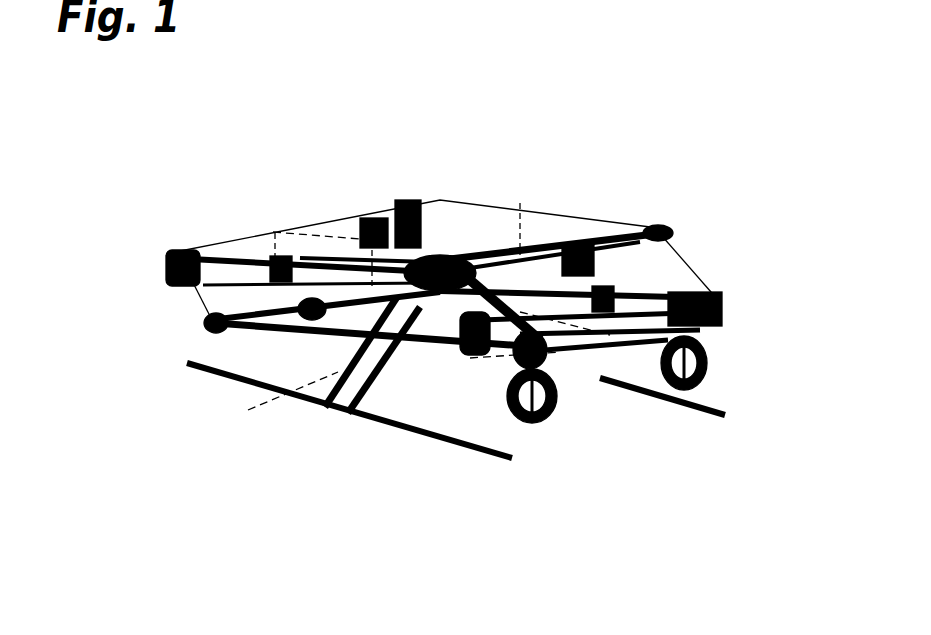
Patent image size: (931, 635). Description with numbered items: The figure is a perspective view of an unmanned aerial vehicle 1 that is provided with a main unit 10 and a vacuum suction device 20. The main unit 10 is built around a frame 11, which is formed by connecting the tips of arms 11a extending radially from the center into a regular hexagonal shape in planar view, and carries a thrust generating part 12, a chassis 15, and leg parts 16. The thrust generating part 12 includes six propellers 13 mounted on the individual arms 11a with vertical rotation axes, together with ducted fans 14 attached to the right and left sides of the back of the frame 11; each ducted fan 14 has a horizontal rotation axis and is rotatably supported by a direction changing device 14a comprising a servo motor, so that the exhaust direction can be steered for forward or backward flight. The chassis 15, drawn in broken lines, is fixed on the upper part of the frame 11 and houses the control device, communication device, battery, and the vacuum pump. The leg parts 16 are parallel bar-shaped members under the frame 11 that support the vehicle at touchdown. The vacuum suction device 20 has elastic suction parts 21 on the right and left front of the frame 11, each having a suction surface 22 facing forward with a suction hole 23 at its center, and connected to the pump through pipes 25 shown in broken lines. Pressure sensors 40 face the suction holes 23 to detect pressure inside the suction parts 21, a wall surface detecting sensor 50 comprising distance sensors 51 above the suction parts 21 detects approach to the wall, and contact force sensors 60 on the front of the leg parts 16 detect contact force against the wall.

The unmanned aerial vehicle 1 is at (643, 200).
The main unit 10 is at (122, 263).
The frame 11 is at (222, 246).
The arm 11a is at (260, 256).
The thrust generating part 12 is at (156, 410).
The propeller 13 is at (390, 290).
The ducted fan 14 is at (362, 240).
The direction changing device 14a is at (178, 256).
The chassis 15 is at (442, 205).
The leg part 16 is at (390, 428).
The vacuum suction device 20 is at (537, 462).
The suction part 21 is at (507, 410).
The suction surface 22 is at (517, 414).
The suction hole 23 is at (551, 408).
The pipe 25 is at (578, 265).
The pressure sensor 40 is at (664, 342).
The wall surface detecting sensor 50 is at (700, 272).
The distance sensor 51 is at (700, 300).
The contact force sensor 60 is at (510, 462).